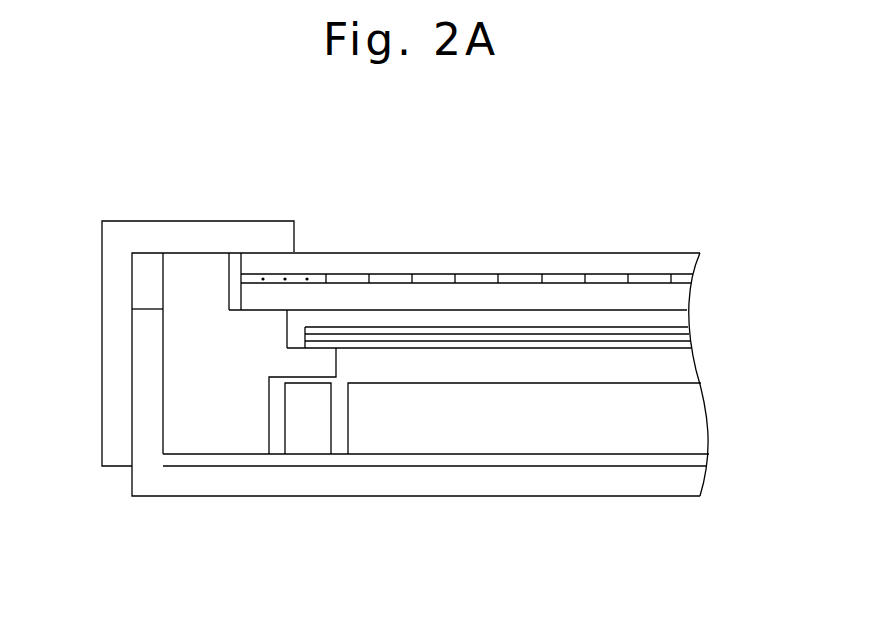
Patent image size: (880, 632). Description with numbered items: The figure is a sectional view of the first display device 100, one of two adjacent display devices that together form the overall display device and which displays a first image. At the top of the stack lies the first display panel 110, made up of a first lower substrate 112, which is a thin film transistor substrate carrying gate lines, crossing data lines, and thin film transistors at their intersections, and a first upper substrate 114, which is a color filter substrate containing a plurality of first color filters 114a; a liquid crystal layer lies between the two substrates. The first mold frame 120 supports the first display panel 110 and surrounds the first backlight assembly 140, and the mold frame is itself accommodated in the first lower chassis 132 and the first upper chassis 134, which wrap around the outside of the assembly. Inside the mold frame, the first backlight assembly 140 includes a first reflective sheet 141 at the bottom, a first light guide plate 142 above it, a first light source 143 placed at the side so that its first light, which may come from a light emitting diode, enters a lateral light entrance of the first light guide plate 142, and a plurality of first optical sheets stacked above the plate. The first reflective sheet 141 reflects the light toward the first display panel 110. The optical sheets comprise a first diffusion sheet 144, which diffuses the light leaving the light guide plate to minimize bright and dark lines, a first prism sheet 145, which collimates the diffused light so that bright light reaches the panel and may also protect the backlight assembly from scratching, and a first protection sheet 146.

The first display device 100 is at (642, 175).
The first display panel 110 is at (531, 254).
The first lower substrate 112 is at (677, 300).
The first upper substrate 114 is at (687, 265).
The first color filters 114a is at (430, 278).
The first mold frame 120 is at (178, 365).
The first lower chassis 132 is at (143, 425).
The first upper chassis 134 is at (110, 280).
The first backlight assembly 140 is at (436, 456).
The first reflective sheet 141 is at (607, 563).
The first light guide plate 142 is at (416, 445).
The first light source 143 is at (306, 446).
The first diffusion sheet 144 is at (462, 347).
The first prism sheet 145 is at (515, 339).
The first protection sheet 146 is at (567, 331).